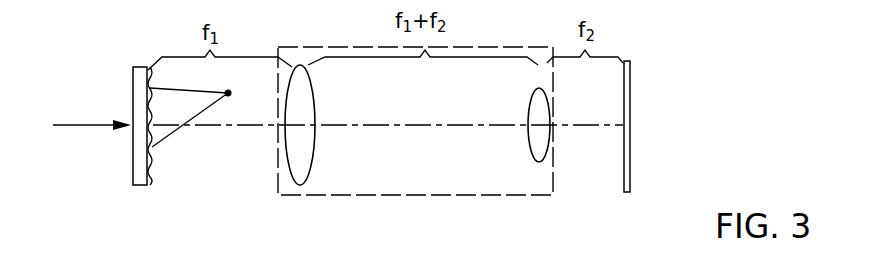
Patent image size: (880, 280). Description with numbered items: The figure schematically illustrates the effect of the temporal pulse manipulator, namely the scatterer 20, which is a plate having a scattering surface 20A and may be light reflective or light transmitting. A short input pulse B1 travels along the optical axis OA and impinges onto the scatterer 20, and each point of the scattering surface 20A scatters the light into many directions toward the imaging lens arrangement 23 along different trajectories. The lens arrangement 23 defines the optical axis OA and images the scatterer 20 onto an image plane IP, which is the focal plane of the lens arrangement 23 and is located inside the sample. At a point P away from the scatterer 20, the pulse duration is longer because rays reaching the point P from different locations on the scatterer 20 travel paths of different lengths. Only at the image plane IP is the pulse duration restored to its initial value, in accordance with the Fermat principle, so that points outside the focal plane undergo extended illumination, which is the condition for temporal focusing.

The input light pulse B1 is at (90, 124).
The optical axis OA is at (226, 128).
The scatterer 20 is at (130, 194).
The scattering surface 20A is at (152, 167).
The point P is at (198, 108).
The lens arrangement 23 is at (425, 197).
The image plane IP is at (630, 75).